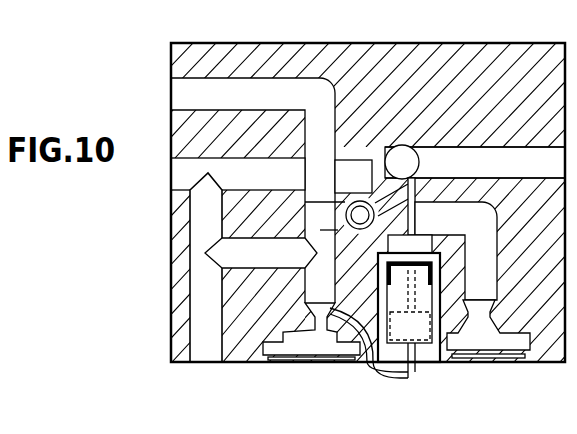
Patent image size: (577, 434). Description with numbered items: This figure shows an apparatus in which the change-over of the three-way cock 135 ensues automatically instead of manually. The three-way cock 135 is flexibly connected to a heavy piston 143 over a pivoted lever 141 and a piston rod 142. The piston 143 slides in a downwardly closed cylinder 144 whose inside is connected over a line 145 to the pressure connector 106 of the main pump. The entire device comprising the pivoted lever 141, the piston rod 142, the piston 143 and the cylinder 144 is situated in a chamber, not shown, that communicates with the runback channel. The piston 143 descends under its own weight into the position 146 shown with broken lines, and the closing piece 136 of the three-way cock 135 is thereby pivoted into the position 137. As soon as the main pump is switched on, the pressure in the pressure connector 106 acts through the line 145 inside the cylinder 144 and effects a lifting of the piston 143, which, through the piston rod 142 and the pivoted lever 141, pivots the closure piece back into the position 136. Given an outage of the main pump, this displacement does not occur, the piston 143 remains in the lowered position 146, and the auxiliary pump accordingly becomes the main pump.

The pressure connector 106 is at (308, 285).
The three-way cock 135 is at (360, 230).
The closing piece 136 is at (345, 214).
The position of closing piece 137 is at (360, 200).
The pivoted lever 141 is at (420, 167).
The piston rod 142 is at (458, 240).
The heavy piston 143 is at (462, 268).
The cylinder 144 is at (437, 300).
The line 145 is at (372, 372).
The position of piston 146 is at (445, 328).